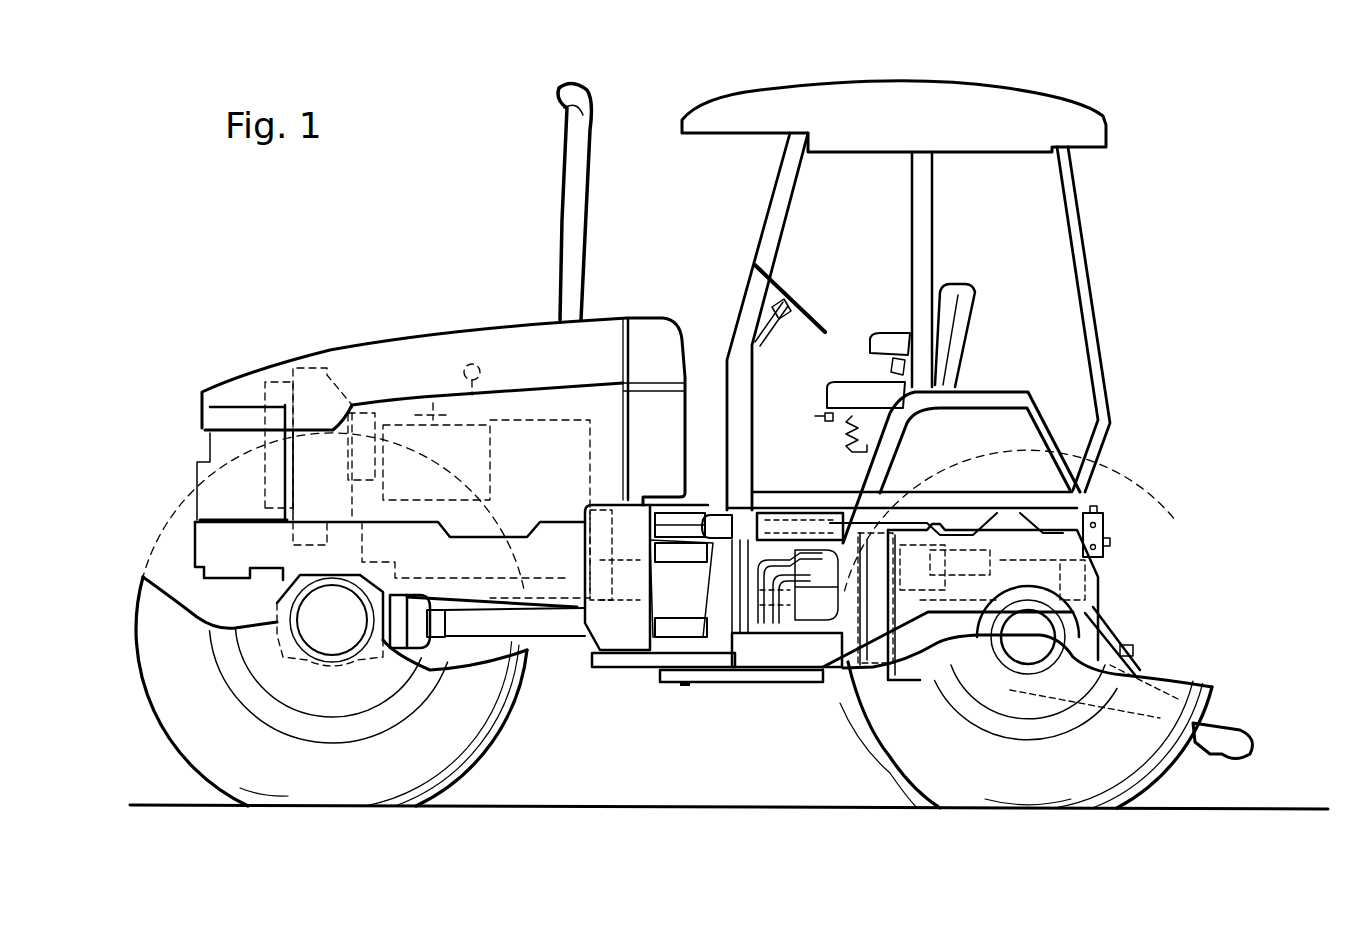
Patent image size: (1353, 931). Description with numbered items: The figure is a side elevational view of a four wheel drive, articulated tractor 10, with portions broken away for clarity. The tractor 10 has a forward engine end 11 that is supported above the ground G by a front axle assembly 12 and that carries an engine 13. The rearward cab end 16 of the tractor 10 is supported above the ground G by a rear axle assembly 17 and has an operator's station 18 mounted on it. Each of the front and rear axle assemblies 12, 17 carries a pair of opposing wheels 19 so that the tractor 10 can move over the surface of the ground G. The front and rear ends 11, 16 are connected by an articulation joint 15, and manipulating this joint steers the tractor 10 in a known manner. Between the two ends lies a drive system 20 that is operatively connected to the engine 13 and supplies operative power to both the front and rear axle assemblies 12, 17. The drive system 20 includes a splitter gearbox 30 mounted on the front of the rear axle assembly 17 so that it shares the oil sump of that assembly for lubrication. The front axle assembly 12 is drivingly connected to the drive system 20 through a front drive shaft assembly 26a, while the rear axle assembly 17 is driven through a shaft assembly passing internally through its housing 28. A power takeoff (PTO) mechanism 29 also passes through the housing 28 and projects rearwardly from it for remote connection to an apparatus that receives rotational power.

The articulated tractor 10 is at (1214, 133).
The forward engine end 11 is at (330, 348).
The front axle assembly 12 is at (290, 645).
The engine 13 is at (432, 410).
The articulation joint 15 is at (613, 201).
The rearward cab end 16 is at (1108, 415).
The rear axle assembly 17 is at (990, 662).
The operator's station 18 is at (1101, 115).
The wheels 19 is at (498, 733).
The drive system 20 is at (683, 743).
The front drive shaft assembly 26a is at (547, 623).
The housing 28 is at (890, 673).
The power takeoff (PTO) mechanism 29 is at (1130, 652).
The splitter gearbox 30 is at (860, 668).
The ground G is at (1233, 808).